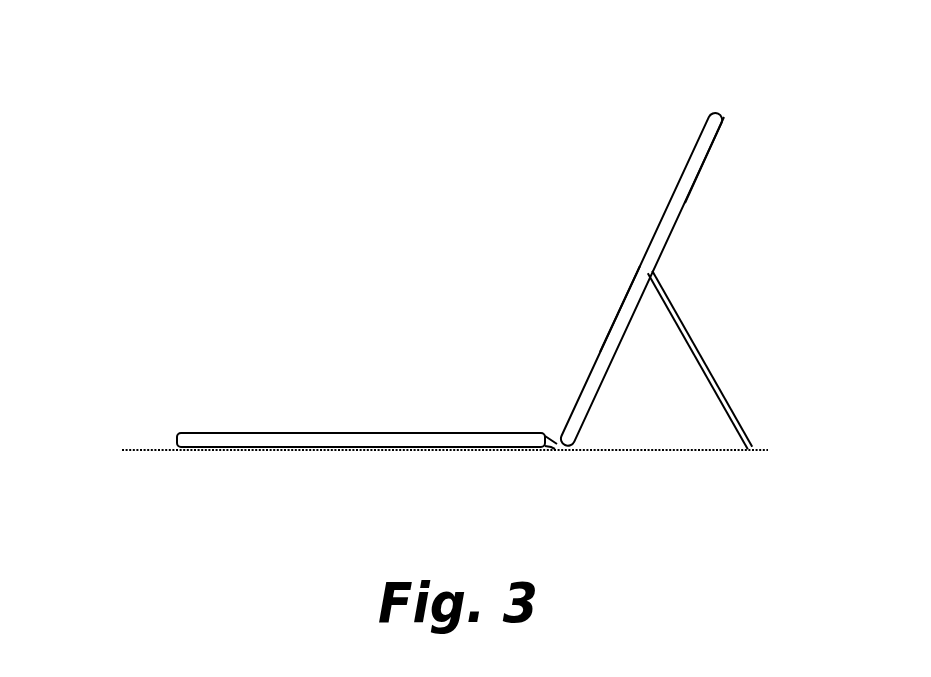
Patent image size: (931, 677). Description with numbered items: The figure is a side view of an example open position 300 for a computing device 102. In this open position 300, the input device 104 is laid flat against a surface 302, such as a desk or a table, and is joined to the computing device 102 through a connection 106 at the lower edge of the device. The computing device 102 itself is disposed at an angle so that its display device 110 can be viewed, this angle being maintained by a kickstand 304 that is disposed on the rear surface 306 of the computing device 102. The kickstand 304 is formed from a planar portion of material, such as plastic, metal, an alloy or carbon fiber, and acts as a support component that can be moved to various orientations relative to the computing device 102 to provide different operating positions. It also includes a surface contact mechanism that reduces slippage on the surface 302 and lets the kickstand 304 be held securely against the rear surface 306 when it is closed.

The open position 300 is at (257, 97).
The computing device 102 is at (713, 120).
The input device 104 is at (360, 433).
The flexible hinge 106 is at (545, 412).
The display device 110 is at (639, 266).
The surface 302 is at (137, 449).
The kickstand 304 is at (694, 338).
The rear surface 306 is at (685, 203).